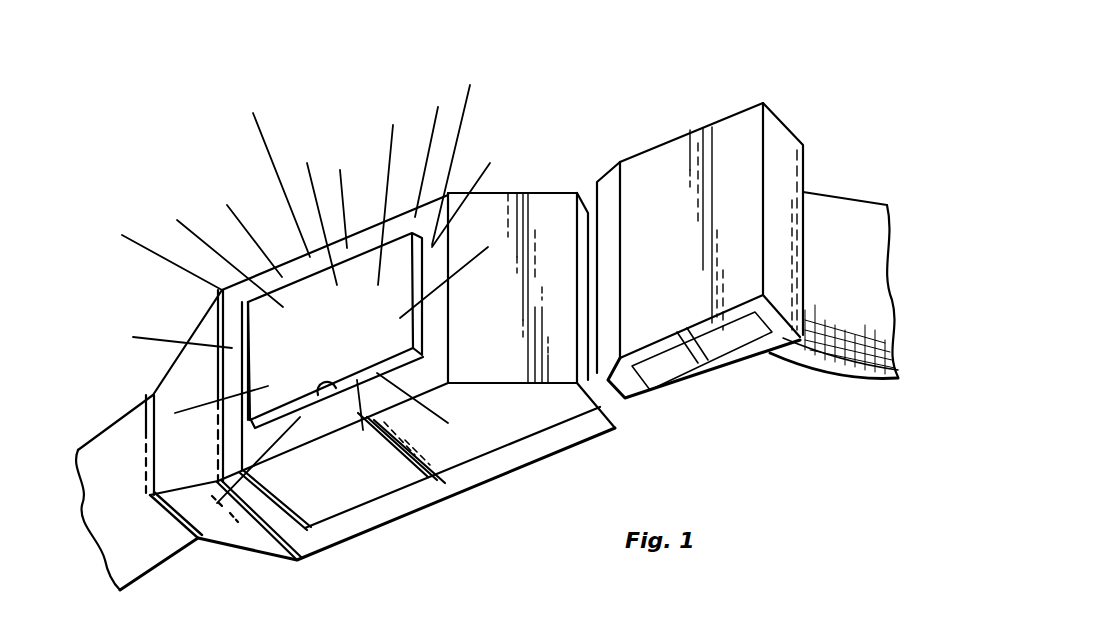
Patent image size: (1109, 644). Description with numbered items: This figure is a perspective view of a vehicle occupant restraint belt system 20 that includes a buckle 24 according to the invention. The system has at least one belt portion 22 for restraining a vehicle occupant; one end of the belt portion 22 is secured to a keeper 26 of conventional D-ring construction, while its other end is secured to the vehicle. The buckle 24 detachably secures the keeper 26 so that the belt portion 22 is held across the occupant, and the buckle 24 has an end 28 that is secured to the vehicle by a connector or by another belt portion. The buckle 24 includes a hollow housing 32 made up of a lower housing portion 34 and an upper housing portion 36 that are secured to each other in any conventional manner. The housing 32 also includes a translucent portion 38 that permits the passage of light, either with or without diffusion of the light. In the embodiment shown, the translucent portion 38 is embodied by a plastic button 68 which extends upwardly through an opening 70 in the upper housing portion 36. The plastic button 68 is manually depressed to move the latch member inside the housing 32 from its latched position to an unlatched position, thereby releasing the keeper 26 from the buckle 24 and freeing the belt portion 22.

The vehicle occupant restraint belt system 20 is at (745, 58).
The belt portion 22 is at (843, 192).
The buckle 24 is at (508, 188).
The keeper 26 is at (631, 158).
The end 28 is at (102, 432).
The hollow housing 32 is at (482, 460).
The lower housing portion 34 is at (422, 500).
The upper housing portion 36 is at (308, 483).
The translucent portion 38 is at (362, 242).
The plastic button 68 is at (282, 245).
The opening 70 is at (336, 386).